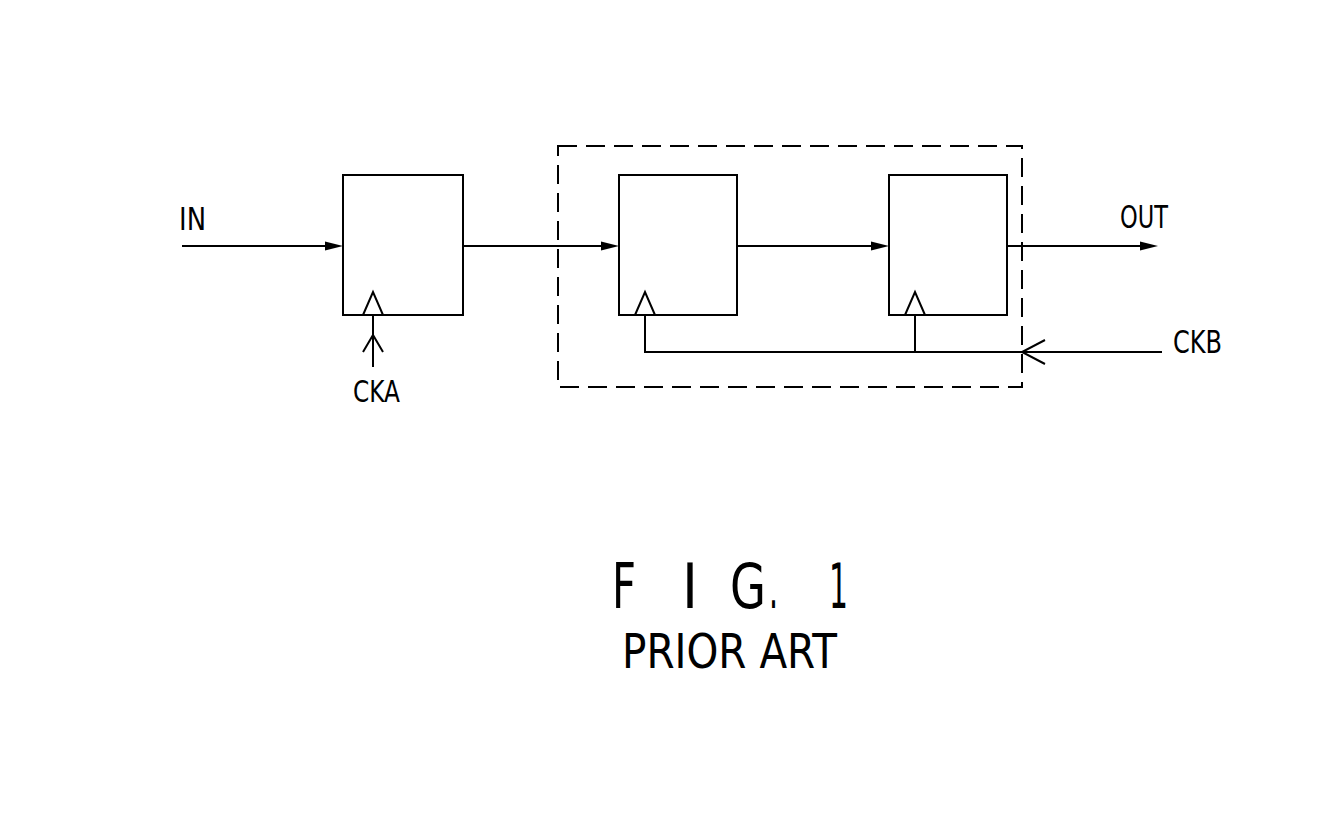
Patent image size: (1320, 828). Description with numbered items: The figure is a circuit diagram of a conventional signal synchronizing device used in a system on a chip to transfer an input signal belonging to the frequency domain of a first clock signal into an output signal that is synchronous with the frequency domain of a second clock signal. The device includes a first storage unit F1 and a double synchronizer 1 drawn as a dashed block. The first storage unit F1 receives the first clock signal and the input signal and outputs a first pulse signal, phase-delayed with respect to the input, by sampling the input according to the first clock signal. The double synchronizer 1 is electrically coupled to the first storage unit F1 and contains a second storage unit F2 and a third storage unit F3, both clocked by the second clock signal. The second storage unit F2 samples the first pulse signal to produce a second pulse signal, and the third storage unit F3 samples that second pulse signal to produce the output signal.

The double synchronizer 1 is at (758, 146).
The first storage unit F1 is at (403, 245).
The second storage unit F2 is at (678, 245).
The third storage unit F3 is at (948, 245).